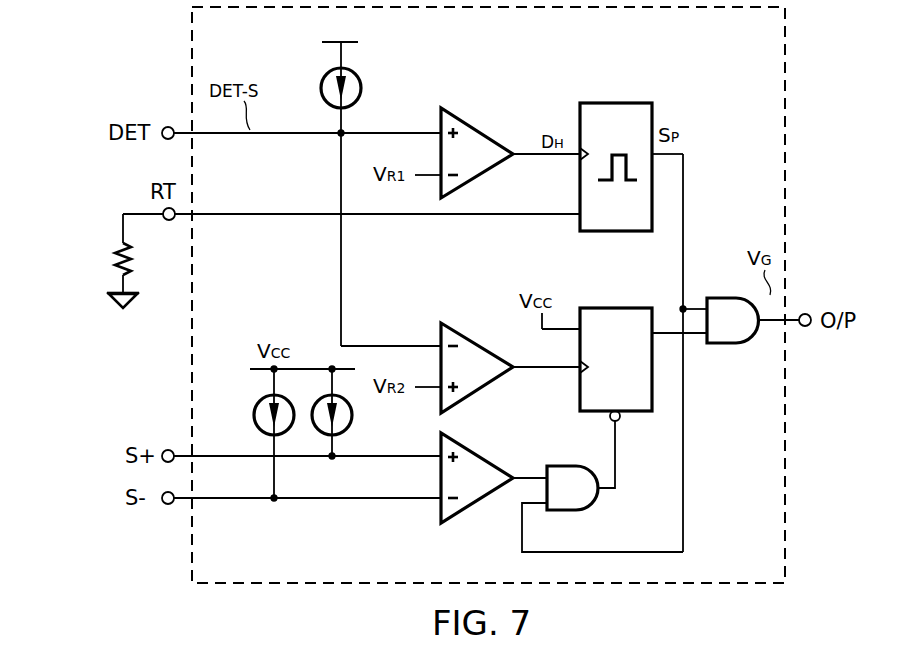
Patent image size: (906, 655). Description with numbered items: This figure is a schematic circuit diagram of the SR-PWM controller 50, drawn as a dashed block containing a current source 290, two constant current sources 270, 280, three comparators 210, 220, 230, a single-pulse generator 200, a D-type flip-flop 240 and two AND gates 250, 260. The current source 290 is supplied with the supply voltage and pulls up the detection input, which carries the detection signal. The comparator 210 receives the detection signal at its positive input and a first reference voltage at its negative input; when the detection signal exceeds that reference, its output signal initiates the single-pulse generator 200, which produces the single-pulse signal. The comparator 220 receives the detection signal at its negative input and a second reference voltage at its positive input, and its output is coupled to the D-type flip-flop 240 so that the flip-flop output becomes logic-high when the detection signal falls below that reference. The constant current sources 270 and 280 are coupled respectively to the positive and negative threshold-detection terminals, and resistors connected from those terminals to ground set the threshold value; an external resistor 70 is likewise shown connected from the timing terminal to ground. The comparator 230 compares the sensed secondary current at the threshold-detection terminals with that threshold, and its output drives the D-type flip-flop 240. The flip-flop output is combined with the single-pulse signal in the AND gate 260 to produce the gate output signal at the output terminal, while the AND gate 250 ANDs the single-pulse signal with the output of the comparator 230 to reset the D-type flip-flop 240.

The SR-PWM controller 50 is at (787, 56).
The timing resistor RT 70 is at (110, 258).
The single-pulse generator 200 is at (628, 100).
The comparator 210 is at (467, 118).
The comparator 220 is at (468, 333).
The comparator 230 is at (480, 508).
The D-type flip-flop 240 is at (628, 306).
The AND gate 250 is at (594, 505).
The AND gate 260 is at (742, 345).
The constant current source 270 is at (354, 422).
The constant current source 280 is at (254, 411).
The current source 290 is at (363, 88).